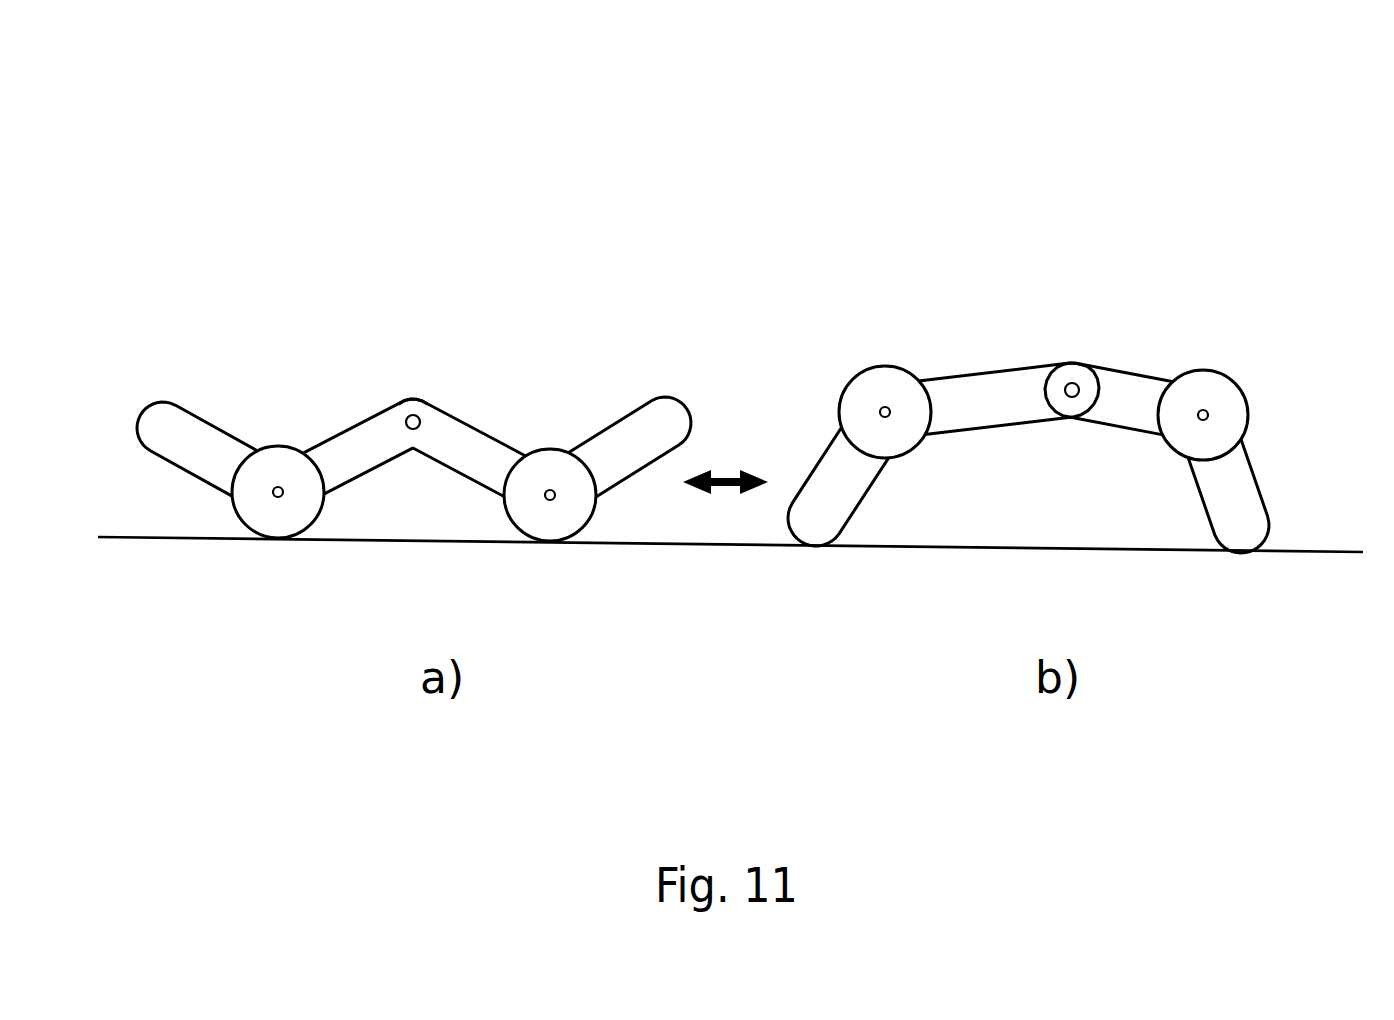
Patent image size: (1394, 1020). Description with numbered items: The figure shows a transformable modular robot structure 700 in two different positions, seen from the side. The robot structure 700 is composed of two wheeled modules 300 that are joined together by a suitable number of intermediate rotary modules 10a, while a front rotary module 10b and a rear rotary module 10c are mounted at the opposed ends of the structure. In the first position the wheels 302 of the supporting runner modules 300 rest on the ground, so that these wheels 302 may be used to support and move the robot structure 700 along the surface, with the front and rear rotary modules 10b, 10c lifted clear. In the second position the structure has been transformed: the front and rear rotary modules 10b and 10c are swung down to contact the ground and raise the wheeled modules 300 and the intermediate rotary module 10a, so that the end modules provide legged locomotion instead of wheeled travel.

In FIG. 11a, the modular robot structure 700 is at (807, 201).
In FIG. 11a, the intermediate rotary module 10a is at (386, 387).
In FIG. 11b, the intermediate rotary module 10a is at (1074, 327).
In FIG. 11a, the front rotary module 10b is at (669, 392).
In FIG. 11b, the front rotary module 10b is at (1279, 472).
In FIG. 11a, the rear rotary module 10c is at (156, 371).
In FIG. 11b, the rear rotary module 10c is at (831, 437).
In FIG. 11a, the wheeled module 300 is at (420, 474).
In FIG. 11b, the wheeled module 300 is at (1058, 338).
In FIG. 11a, the wheel 302 is at (271, 539).
In FIG. 11b, the wheel 302 is at (898, 361).